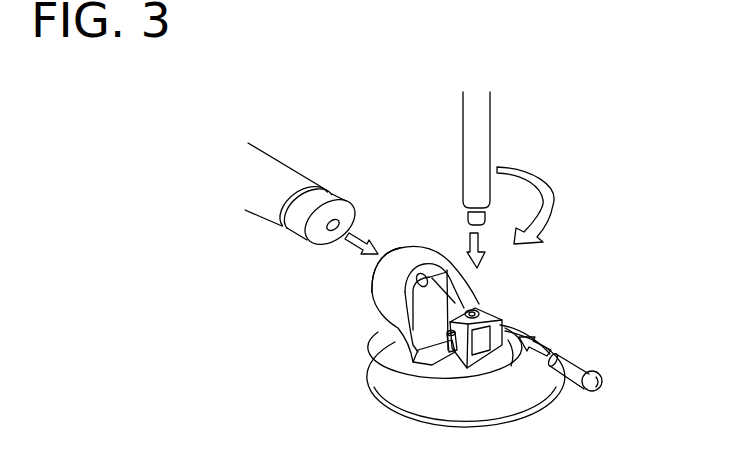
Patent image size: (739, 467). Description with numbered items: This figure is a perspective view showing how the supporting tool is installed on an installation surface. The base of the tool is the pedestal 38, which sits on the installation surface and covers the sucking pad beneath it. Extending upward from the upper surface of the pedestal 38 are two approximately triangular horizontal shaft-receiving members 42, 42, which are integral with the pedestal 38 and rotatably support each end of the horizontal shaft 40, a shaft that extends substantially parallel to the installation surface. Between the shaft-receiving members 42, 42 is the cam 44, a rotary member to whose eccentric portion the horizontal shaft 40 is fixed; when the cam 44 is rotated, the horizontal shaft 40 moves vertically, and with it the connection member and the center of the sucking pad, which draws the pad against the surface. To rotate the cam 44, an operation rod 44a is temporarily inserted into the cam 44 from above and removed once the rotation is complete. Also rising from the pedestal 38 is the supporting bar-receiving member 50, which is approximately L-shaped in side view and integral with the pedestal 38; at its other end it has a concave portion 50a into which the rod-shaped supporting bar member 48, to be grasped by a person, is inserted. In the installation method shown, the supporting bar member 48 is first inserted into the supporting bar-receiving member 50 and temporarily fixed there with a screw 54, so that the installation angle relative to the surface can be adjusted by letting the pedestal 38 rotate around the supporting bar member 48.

The pedestal 38 is at (383, 363).
The horizontal shaft 40 is at (438, 362).
The horizontal shaft-receiving member 42 is at (500, 334).
The cam 44 is at (490, 308).
The operation rod 44a is at (478, 128).
The supporting bar member 48 is at (277, 177).
The supporting bar-receiving member 50 is at (397, 252).
The concave portion 50a is at (358, 280).
The screw 54 is at (577, 358).